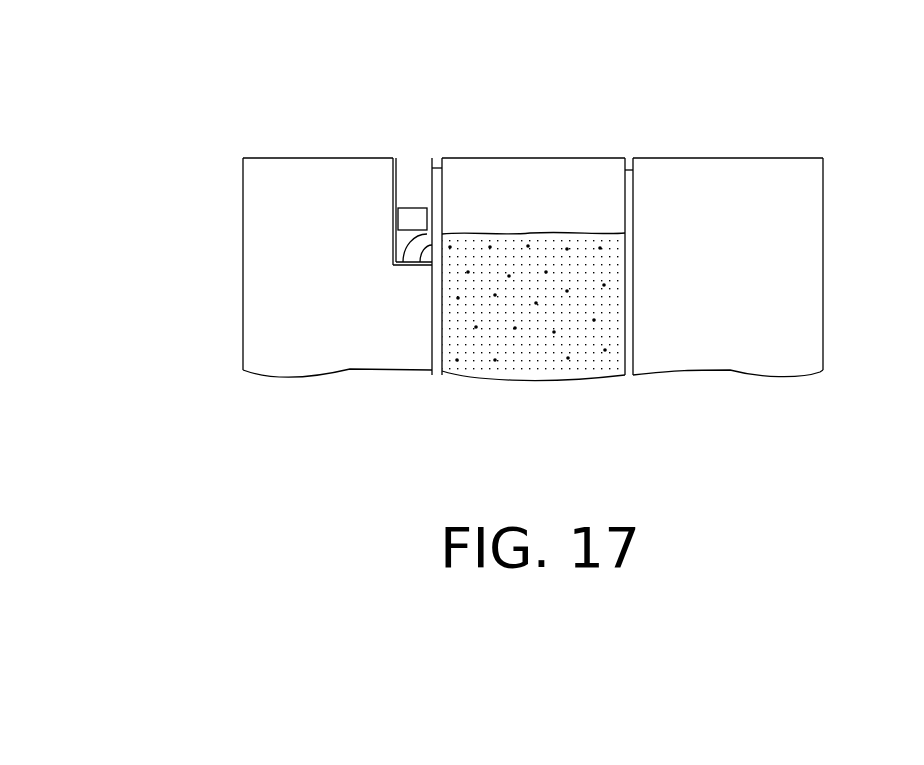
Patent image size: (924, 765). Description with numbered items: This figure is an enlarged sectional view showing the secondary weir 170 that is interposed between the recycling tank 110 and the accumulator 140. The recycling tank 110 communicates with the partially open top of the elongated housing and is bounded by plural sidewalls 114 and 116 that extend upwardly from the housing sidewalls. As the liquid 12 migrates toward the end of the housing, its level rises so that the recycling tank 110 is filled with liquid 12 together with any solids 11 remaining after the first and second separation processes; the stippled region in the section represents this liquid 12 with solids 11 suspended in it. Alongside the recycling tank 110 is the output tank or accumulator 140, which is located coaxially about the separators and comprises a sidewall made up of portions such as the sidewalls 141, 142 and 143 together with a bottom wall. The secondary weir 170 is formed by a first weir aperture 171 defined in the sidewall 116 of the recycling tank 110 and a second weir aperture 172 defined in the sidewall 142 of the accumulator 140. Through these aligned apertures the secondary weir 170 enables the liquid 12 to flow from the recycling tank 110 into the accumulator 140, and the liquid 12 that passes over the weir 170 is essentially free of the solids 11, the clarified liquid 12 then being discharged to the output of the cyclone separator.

The solids 11 is at (537, 368).
The liquid 12 is at (583, 328).
The recycling tank 110 is at (527, 208).
The sidewall 114 is at (635, 212).
The sidewall 116 is at (442, 302).
The accumulator 140 is at (715, 352).
The sidewall 141 is at (823, 223).
The sidewall 142 is at (307, 265).
The sidewall 143 is at (243, 342).
The secondary weir 170 is at (422, 183).
The first weir aperture 171 is at (433, 233).
The second weir aperture 172 is at (412, 220).